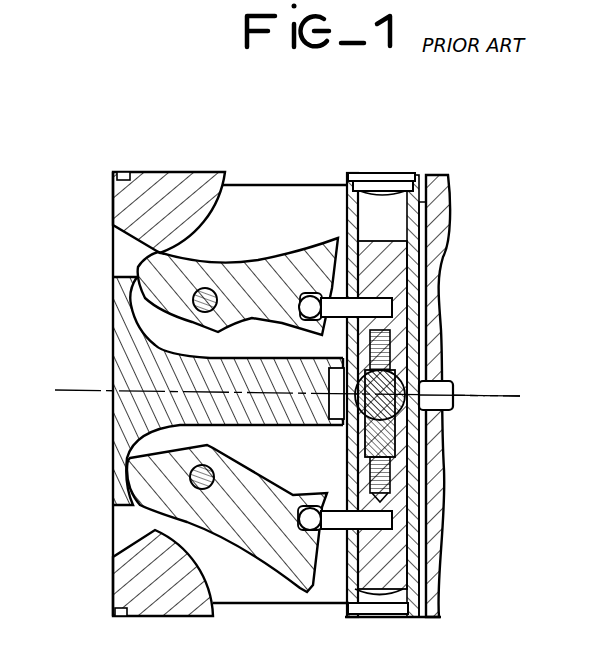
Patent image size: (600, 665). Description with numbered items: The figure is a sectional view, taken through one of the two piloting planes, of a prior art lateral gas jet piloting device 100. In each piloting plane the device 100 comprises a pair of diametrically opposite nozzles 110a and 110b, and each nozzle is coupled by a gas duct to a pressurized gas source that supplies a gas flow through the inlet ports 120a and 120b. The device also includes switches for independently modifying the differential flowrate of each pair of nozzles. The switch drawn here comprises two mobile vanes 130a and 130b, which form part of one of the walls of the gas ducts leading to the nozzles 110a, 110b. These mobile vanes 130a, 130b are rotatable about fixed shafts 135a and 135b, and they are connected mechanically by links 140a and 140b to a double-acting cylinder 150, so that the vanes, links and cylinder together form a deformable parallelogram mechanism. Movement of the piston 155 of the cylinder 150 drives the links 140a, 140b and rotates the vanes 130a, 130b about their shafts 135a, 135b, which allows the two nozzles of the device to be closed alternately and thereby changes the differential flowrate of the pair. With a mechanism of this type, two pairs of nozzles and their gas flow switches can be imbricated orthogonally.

The lateral gas jet piloting device 100 is at (280, 114).
The nozzle 110a is at (280, 606).
The nozzle 110b is at (297, 185).
The inlet port 120a is at (112, 527).
The inlet port 120b is at (112, 258).
The mobile vane 130a is at (232, 536).
The mobile vane 130b is at (236, 254).
The fixed shaft 135a is at (203, 465).
The fixed shaft 135b is at (207, 311).
The link 140a is at (427, 546).
The link 140b is at (410, 295).
The double-acting cylinder 150 is at (424, 492).
The piston 155 is at (408, 466).